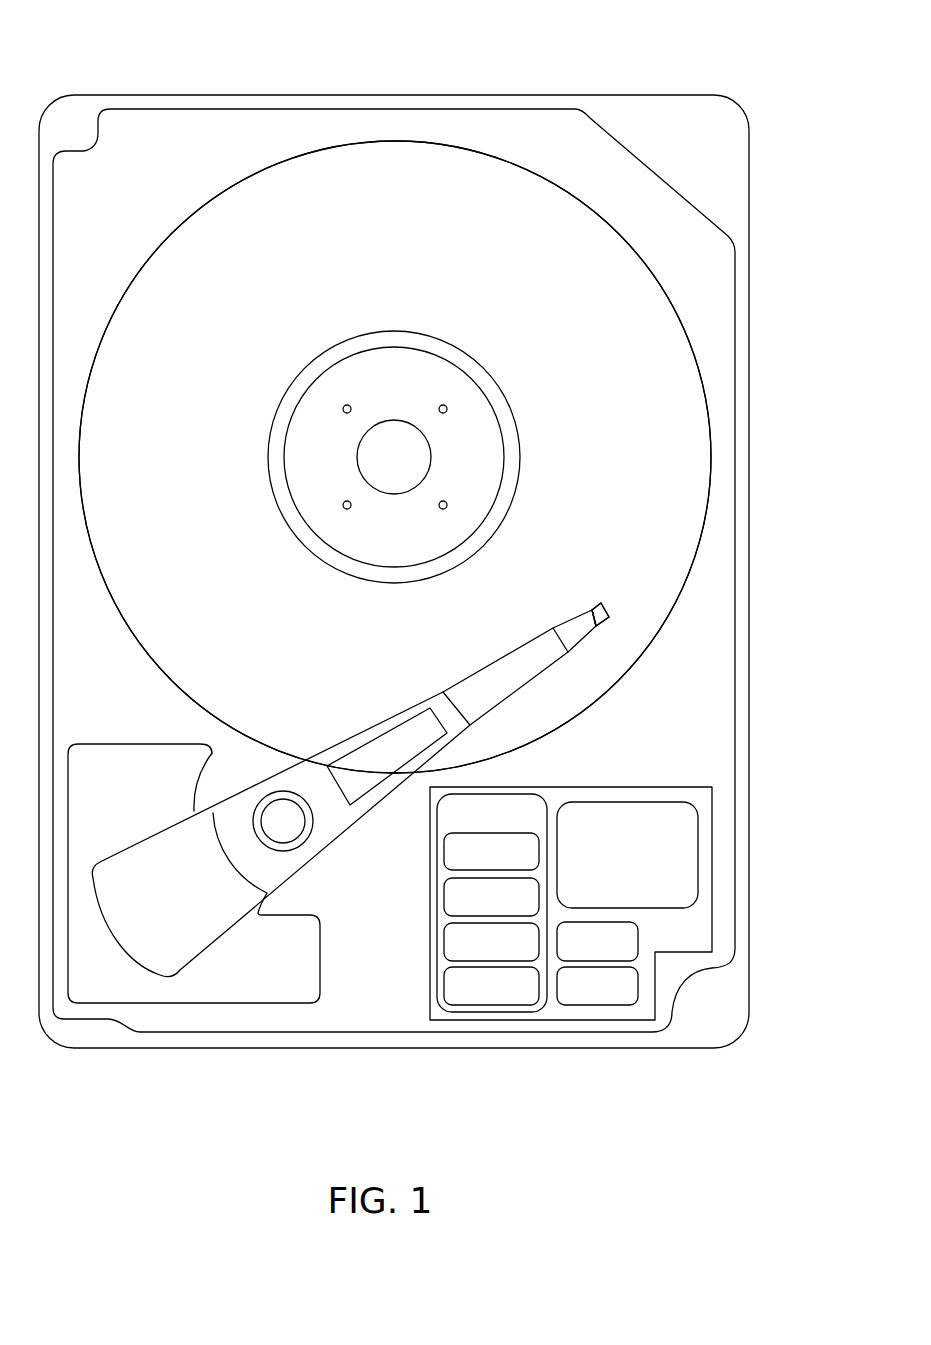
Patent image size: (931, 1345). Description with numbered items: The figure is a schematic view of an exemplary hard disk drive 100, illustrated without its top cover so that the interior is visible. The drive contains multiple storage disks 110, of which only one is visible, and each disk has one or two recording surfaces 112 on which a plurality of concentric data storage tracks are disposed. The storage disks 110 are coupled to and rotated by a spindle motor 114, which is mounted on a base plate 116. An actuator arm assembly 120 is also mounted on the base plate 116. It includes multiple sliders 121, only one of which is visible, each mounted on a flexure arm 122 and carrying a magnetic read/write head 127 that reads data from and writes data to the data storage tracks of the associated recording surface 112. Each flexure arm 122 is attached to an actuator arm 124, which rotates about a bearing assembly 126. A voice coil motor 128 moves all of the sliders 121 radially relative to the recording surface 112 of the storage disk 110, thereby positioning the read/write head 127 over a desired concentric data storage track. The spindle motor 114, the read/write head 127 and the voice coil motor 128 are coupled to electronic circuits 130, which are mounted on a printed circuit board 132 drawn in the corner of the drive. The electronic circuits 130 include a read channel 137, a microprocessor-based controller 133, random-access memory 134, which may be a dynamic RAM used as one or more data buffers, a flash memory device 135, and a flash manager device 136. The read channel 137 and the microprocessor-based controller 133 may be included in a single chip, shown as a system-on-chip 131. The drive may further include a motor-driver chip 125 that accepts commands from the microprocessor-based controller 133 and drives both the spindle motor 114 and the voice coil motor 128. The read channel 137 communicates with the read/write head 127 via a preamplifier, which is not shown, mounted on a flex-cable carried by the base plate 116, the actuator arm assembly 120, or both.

The hard disk drive 100 is at (129, 53).
The storage disk 110 is at (173, 235).
The recording surface 112 is at (161, 441).
The spindle motor 114 is at (490, 398).
The base plate 116 is at (735, 597).
The actuator arm assembly 120 is at (388, 708).
The slider 121 is at (603, 605).
The flexure arm 122 is at (570, 620).
The actuator arm 124 is at (463, 680).
The motor-driver chip 125 is at (578, 954).
The bearing assembly 126 is at (311, 860).
The read/write head 127 is at (599, 580).
The voice coil motor 128 is at (323, 946).
The electronic circuits 130 is at (575, 864).
The system-on-chip 131 is at (472, 829).
The printed circuit board 132 is at (648, 786).
The microprocessor-based controller 133 is at (472, 865).
The random-access memory 134 is at (578, 999).
The flash memory device 135 is at (607, 867).
The flash manager device 136 is at (472, 910).
The read channel 137 is at (472, 955).